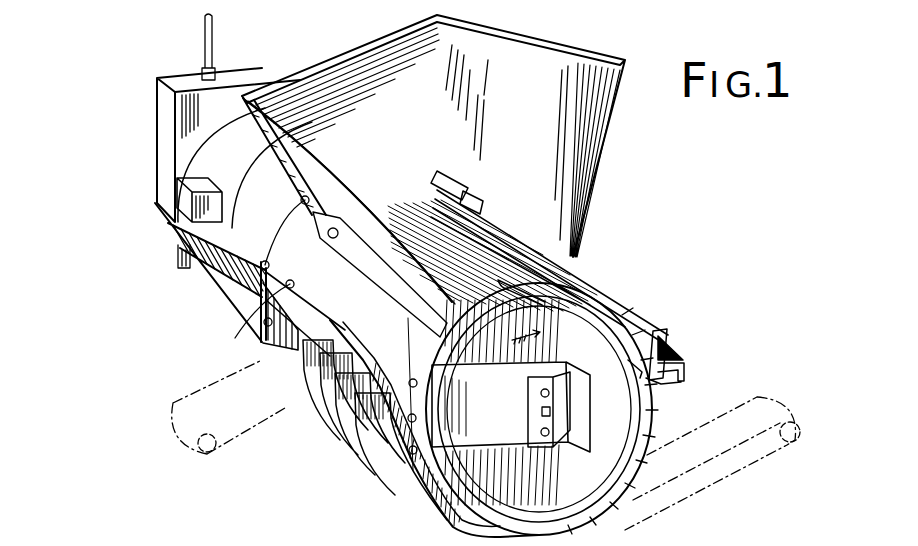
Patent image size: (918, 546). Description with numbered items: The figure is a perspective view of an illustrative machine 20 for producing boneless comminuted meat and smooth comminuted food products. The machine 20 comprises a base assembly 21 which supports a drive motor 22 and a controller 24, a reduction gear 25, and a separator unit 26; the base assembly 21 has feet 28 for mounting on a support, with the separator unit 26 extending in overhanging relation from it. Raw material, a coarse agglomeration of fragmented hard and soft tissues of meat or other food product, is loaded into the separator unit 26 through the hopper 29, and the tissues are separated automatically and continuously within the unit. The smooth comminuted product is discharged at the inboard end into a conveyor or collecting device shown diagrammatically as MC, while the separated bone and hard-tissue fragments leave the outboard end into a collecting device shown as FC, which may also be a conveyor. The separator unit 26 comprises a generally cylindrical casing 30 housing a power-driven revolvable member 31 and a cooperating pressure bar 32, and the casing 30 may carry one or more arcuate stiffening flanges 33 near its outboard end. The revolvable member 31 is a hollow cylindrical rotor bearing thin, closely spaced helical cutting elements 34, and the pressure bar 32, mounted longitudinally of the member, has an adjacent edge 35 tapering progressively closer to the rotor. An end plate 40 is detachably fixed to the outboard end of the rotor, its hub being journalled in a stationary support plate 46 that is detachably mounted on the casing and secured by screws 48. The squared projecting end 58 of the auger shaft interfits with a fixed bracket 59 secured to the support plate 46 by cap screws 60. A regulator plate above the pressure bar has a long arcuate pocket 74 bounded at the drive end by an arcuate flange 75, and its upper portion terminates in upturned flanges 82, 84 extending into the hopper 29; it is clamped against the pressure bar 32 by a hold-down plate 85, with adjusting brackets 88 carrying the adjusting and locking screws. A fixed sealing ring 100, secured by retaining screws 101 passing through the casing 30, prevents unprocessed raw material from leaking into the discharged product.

The machine 20 is at (123, 350).
The base assembly 21 is at (218, 300).
The drive motor 22 is at (222, 166).
The controller 24 is at (158, 115).
The reduction gear 25 is at (248, 242).
The separator unit 26 is at (369, 488).
The feet 28 is at (178, 258).
The hopper 29 is at (613, 166).
The casing 30 is at (292, 303).
The revolvable member 31 is at (624, 464).
The pressure bar 32 is at (666, 384).
The arcuate stiffening flanges 33 is at (352, 427).
The helical cutting elements 34 is at (535, 301).
The edge 35 is at (638, 380).
The end plate 40 is at (560, 490).
The support plate 46 is at (486, 437).
The screws 48 is at (413, 382).
The projecting end 58 is at (551, 408).
The fixed bracket 59 is at (536, 445).
The cap screws 60 is at (551, 441).
The arcuate pocket 74 is at (436, 187).
The arcuate flange 75 is at (415, 202).
The upturned flange 82 is at (509, 240).
The upturned flange 84 is at (437, 186).
The hold-down plate 85 is at (668, 350).
The adjusting brackets 88 is at (658, 330).
The sealing ring 100 is at (395, 205).
The retaining screws 101 is at (290, 287).
The conveyor MC is at (168, 420).
The collecting device FC is at (773, 413).